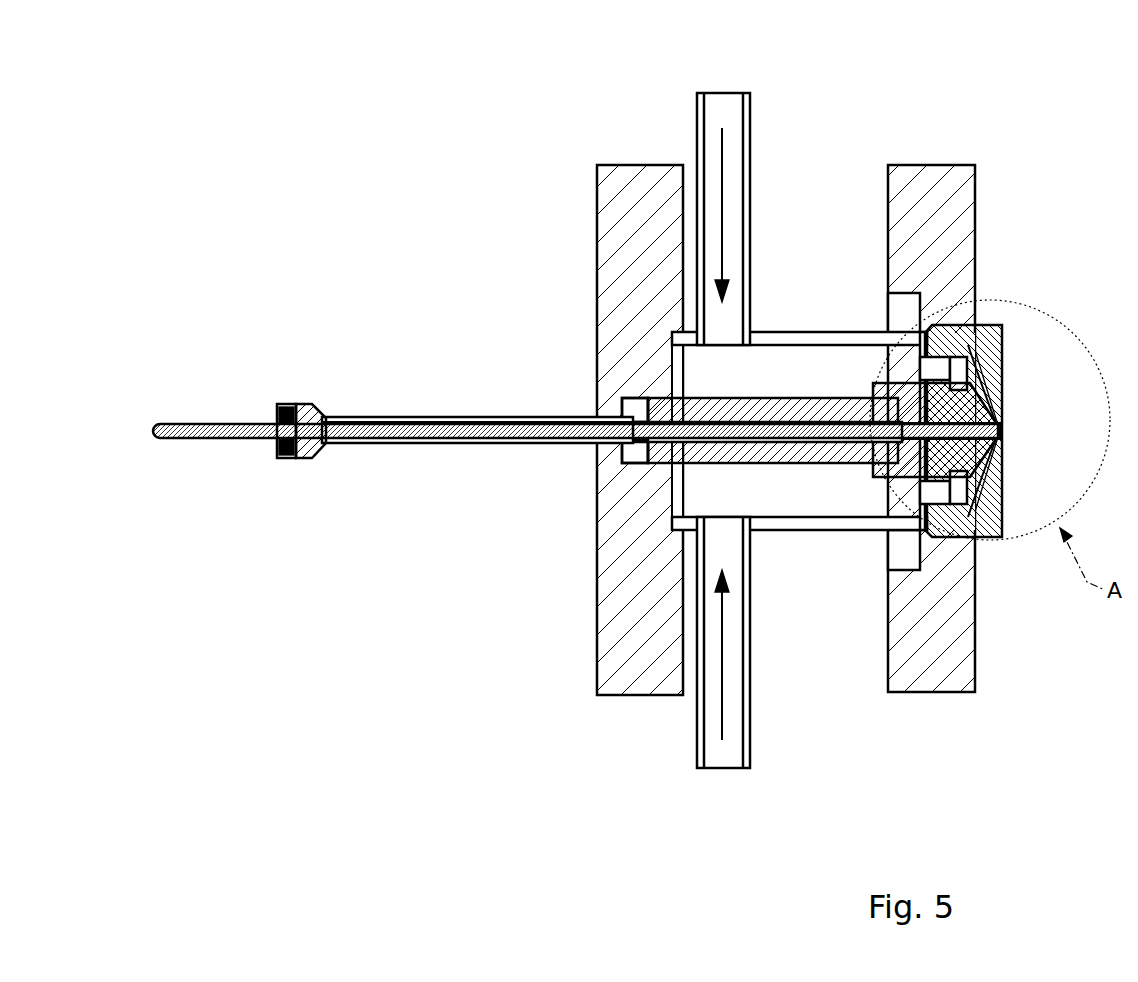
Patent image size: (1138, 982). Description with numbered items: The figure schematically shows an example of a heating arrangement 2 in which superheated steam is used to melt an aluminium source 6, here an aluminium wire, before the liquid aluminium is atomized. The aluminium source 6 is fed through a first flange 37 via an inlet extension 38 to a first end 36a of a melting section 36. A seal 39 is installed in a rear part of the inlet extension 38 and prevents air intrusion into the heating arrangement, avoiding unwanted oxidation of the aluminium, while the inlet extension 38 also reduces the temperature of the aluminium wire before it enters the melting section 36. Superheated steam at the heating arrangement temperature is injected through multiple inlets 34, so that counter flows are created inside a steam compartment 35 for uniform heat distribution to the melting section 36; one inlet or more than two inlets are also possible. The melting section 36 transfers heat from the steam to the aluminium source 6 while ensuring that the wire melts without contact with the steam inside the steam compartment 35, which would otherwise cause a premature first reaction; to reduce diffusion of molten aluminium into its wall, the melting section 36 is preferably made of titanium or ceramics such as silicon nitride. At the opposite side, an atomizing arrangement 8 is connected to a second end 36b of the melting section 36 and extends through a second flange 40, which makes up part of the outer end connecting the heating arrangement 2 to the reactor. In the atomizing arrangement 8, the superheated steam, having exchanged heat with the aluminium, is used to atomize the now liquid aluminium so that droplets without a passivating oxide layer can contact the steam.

The heating arrangement 2 is at (345, 153).
The aluminium source 6 is at (197, 424).
The atomizing arrangement 8 is at (1002, 372).
The inlets 34 is at (722, 92).
The steam compartment 35 is at (745, 391).
The melting section 36 is at (792, 398).
The first end of the melting section 36a is at (643, 415).
The second end of the melting section 36b is at (880, 393).
The first flange 37 is at (596, 289).
The inlet extension 38 is at (430, 446).
The seal 39 is at (278, 455).
The second flange 40 is at (940, 165).